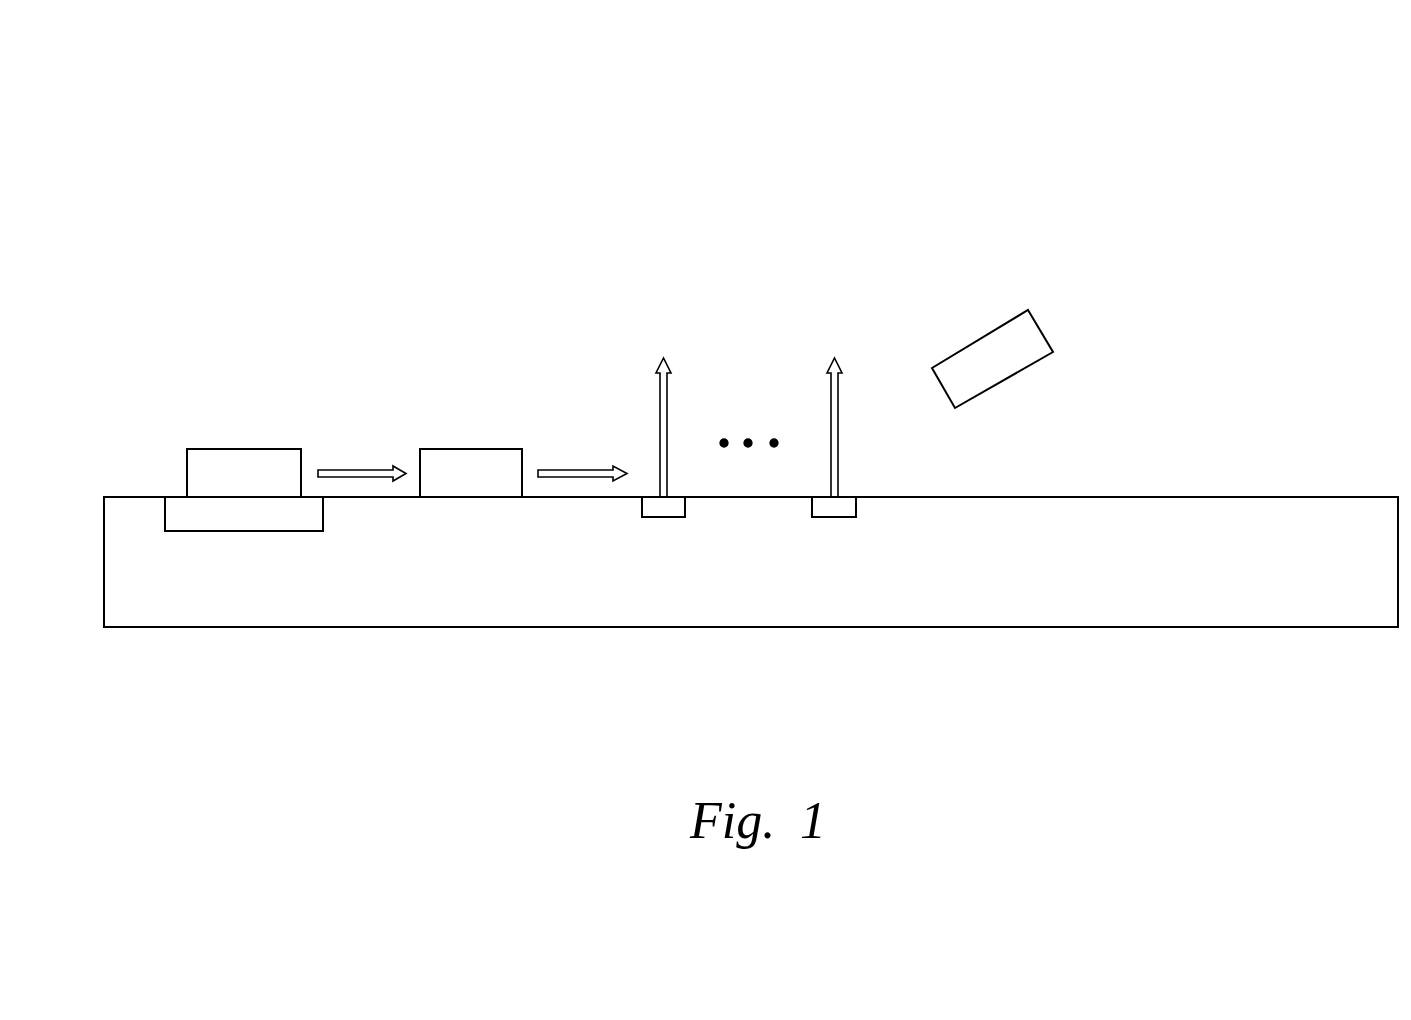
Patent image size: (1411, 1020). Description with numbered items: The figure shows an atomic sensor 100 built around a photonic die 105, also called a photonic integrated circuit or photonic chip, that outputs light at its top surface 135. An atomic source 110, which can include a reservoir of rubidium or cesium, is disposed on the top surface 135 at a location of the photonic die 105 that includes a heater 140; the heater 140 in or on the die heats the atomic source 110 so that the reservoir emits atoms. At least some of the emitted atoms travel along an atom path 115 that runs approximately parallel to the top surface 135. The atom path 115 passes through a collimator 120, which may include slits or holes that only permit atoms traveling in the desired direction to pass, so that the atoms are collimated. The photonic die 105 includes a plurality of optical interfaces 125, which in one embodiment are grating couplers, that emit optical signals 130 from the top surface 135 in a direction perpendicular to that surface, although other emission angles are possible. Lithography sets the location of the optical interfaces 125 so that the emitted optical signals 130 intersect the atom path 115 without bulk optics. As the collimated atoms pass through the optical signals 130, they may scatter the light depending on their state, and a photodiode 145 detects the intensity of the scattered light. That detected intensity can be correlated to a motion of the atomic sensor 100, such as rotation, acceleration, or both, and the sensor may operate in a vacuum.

The atomic sensor 100 is at (1078, 100).
The photonic die 105 is at (883, 612).
The atomic source 110 is at (244, 458).
The atom path 115 is at (362, 470).
The collimator 120 is at (457, 482).
The optical interfaces 125 is at (830, 518).
The optical signals 130 is at (660, 426).
The top surface 135 is at (1183, 493).
The heater 140 is at (243, 517).
The photodiode (PD) 145 is at (1043, 330).